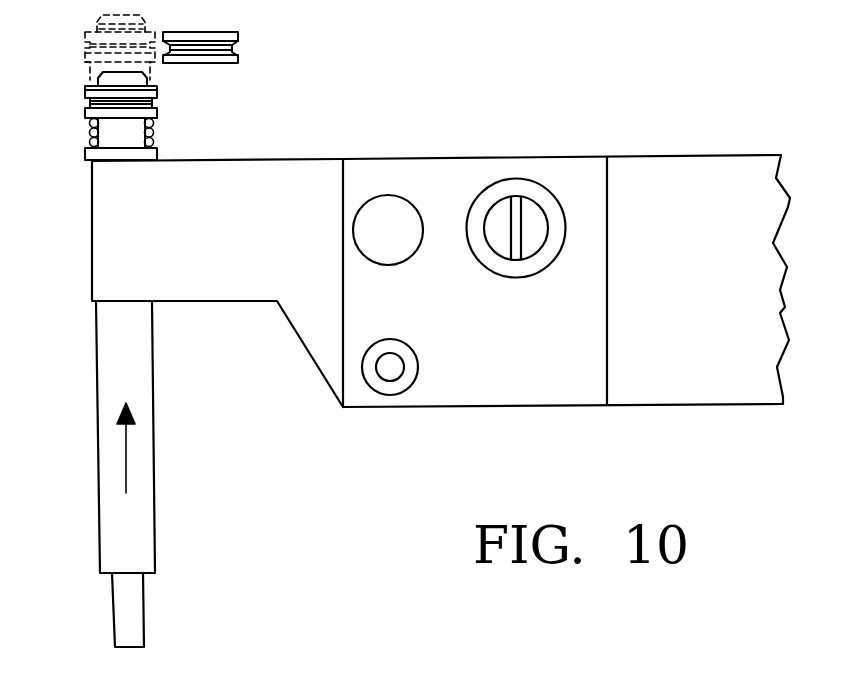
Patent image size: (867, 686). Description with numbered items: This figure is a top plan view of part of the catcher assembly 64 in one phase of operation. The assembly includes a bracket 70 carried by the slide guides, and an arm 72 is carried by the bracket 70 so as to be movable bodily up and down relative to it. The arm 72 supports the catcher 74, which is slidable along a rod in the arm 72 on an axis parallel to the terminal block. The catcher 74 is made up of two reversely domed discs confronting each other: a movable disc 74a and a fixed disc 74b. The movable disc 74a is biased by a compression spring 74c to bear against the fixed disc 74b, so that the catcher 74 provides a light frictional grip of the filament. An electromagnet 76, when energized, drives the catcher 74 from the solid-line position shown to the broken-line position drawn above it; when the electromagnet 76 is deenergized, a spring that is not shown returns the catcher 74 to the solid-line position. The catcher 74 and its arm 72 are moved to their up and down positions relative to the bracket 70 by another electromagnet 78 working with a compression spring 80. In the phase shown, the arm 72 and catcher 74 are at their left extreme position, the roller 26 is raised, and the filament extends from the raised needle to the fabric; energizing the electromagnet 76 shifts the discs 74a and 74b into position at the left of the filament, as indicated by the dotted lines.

The roller 26 is at (230, 33).
The catcher assembly 64 is at (437, 211).
The bracket 70 is at (509, 347).
The arm 72 is at (227, 241).
The catcher 74 is at (134, 112).
The movable disc 74a is at (85, 113).
The fixed disc 74b is at (85, 93).
The compression spring 74c is at (90, 135).
The electromagnet 76 is at (155, 453).
The electromagnet 78 is at (388, 194).
The compression spring 80 is at (517, 187).